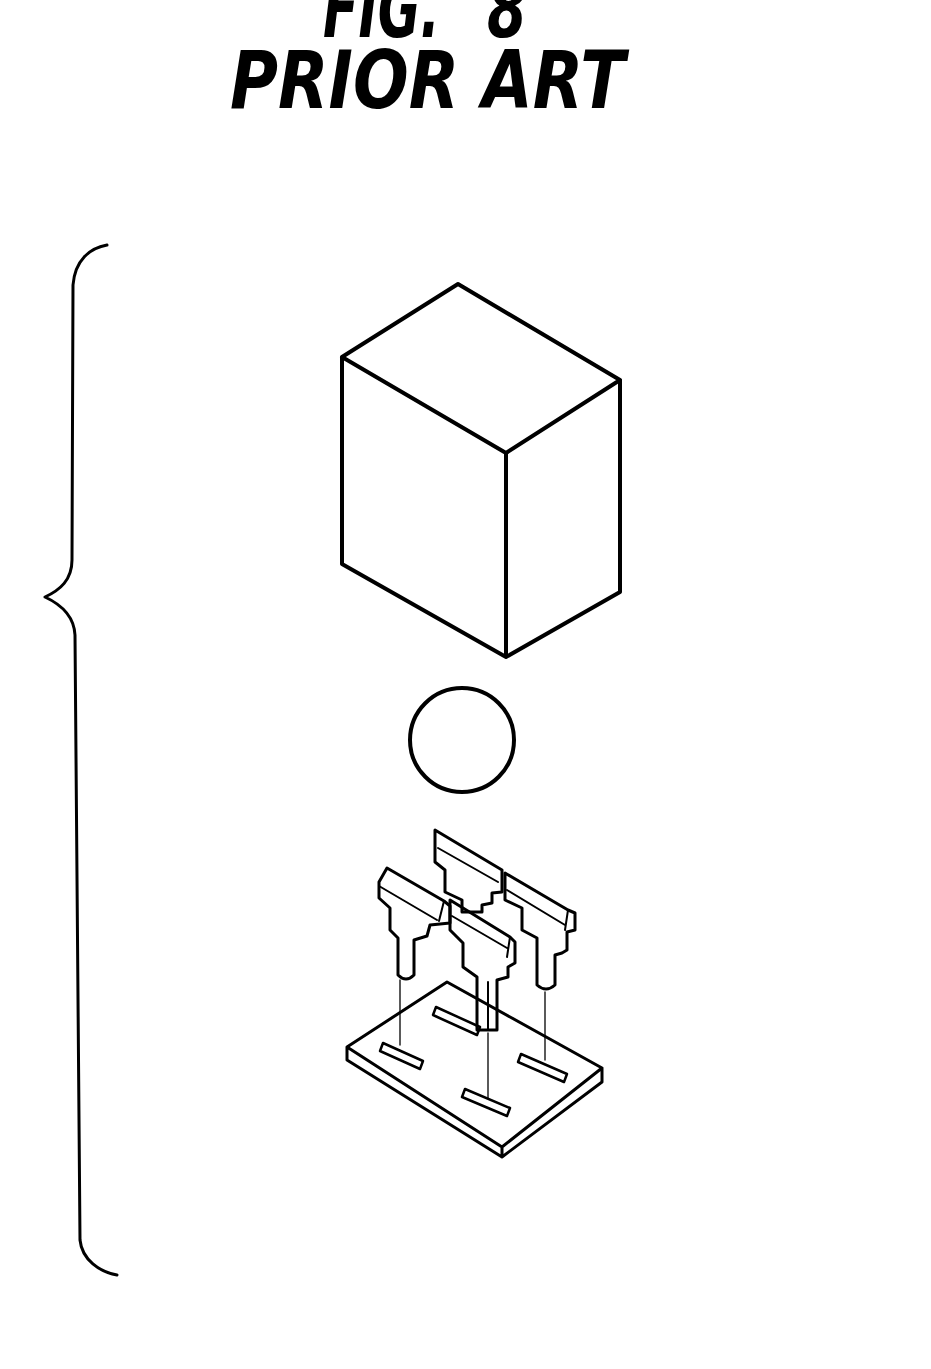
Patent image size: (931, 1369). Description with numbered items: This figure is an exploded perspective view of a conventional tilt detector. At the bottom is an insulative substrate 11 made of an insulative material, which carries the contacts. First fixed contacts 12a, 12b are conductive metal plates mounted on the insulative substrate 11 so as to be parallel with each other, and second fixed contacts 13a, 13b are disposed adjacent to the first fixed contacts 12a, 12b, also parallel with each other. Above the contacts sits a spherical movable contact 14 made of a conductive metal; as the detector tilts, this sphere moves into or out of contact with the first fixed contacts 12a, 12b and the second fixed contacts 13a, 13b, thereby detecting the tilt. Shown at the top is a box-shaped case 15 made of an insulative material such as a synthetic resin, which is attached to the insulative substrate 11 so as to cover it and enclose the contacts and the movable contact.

The insulative substrate 11 is at (600, 1065).
The first fixed contact 12a is at (478, 948).
The first fixed contact 12b is at (545, 915).
The second fixed contact 13a is at (395, 898).
The second fixed contact 13b is at (465, 870).
The spherical movable contact 14 is at (411, 748).
The box-shaped case 15 is at (334, 429).